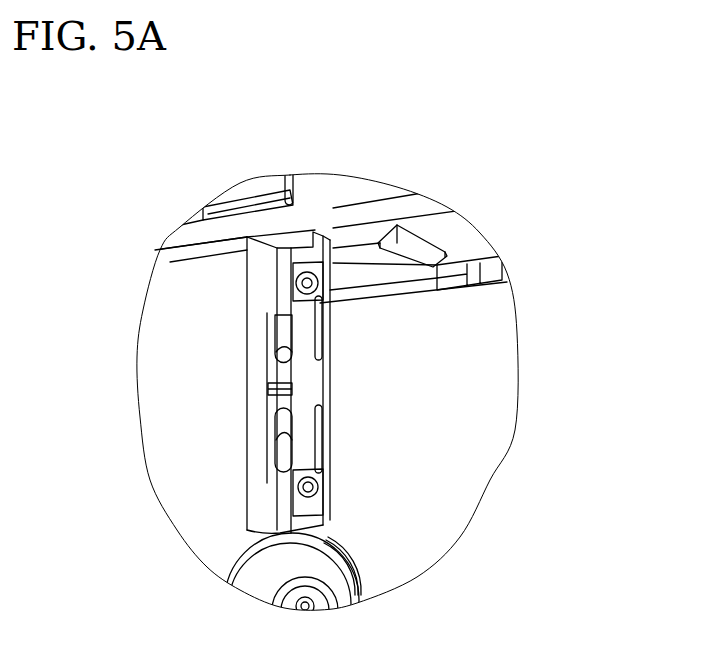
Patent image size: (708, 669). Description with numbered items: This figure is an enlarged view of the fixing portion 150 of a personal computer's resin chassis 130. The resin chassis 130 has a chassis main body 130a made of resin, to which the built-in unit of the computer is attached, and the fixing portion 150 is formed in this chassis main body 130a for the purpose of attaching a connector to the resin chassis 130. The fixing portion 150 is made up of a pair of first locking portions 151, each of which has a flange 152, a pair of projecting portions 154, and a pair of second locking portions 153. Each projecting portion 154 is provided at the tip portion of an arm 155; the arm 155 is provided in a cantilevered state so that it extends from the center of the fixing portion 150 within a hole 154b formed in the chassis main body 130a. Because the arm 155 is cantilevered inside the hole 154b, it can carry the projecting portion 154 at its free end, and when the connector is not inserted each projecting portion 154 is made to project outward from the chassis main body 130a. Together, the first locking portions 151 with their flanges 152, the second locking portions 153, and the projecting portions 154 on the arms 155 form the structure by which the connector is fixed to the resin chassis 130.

The resin chassis 130 is at (494, 298).
The chassis main body 130a is at (463, 428).
The fixing portion 150 is at (226, 259).
The first locking portion 151 is at (268, 181).
The flange 152 is at (300, 246).
The second locking portion 153 is at (268, 278).
The projecting portion 154 is at (322, 275).
The hole 154b is at (328, 330).
The arm 155 is at (287, 343).